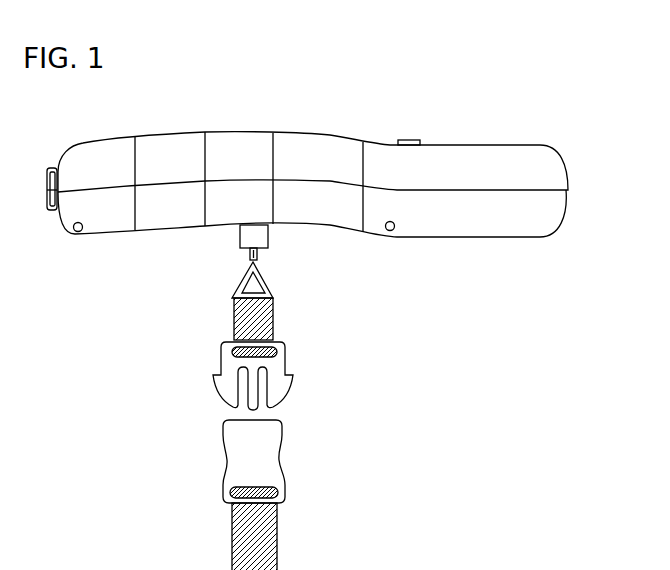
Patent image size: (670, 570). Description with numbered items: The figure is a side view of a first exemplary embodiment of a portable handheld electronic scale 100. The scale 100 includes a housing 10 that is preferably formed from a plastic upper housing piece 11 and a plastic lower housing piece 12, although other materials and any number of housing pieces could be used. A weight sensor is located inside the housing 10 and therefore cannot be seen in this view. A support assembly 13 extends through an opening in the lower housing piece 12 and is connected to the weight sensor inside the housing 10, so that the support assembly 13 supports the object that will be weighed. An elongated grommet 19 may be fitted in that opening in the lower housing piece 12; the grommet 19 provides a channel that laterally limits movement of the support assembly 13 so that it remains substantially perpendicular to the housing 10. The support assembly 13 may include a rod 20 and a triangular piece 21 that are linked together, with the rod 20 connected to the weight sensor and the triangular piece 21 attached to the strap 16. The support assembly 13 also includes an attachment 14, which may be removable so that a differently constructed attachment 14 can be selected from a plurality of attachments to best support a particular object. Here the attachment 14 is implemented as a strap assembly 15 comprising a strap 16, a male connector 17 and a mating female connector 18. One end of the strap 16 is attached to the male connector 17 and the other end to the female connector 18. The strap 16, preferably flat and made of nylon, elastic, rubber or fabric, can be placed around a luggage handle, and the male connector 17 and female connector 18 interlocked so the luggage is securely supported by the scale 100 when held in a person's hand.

The portable handheld electronic scale 100 is at (365, 94).
The housing 10 is at (530, 145).
The upper housing piece 11 is at (562, 158).
The lower housing piece 12 is at (563, 222).
The support assembly 13 is at (397, 332).
The attachment 14 is at (201, 512).
The strap assembly 15 is at (305, 528).
The strap 16 is at (232, 568).
The male connector 17 is at (286, 362).
The female connector 18 is at (285, 446).
The grommet 19 is at (268, 243).
The rod 20 is at (250, 258).
The triangular piece 21 is at (274, 298).